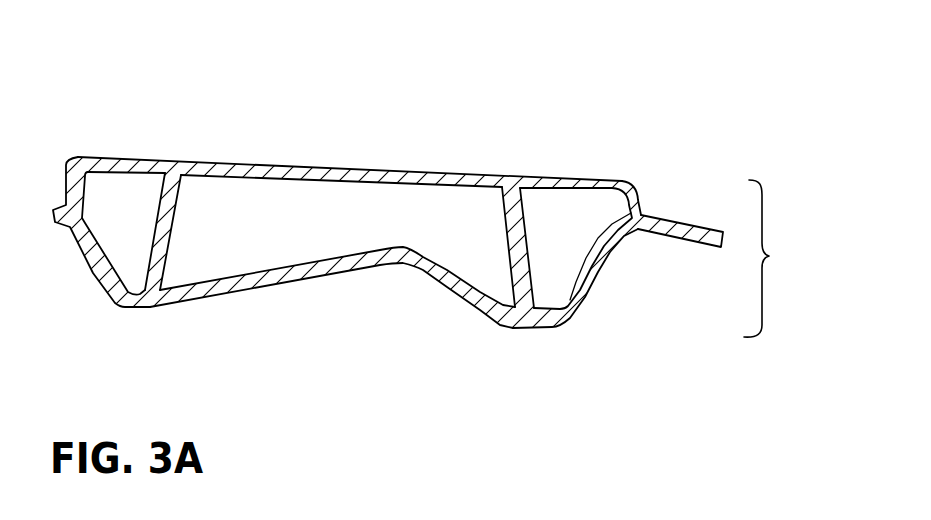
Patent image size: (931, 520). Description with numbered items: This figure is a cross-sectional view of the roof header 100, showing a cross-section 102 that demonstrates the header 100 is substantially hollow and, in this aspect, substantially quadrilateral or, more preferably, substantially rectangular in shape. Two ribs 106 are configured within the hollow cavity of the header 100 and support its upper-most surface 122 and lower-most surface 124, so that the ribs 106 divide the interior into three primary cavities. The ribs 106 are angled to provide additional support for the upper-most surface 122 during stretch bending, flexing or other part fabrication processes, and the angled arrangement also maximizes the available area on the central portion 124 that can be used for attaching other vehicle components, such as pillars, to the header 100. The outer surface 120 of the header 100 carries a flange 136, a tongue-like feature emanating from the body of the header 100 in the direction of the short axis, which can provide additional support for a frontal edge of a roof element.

The roof header 100 is at (684, 124).
The cross-section 102 is at (590, 177).
The ribs 106 is at (169, 237).
The outer surface 120 is at (776, 258).
The upper-most surface 122 is at (378, 167).
The lower-most surface 124 is at (327, 278).
The flange 136 is at (682, 241).